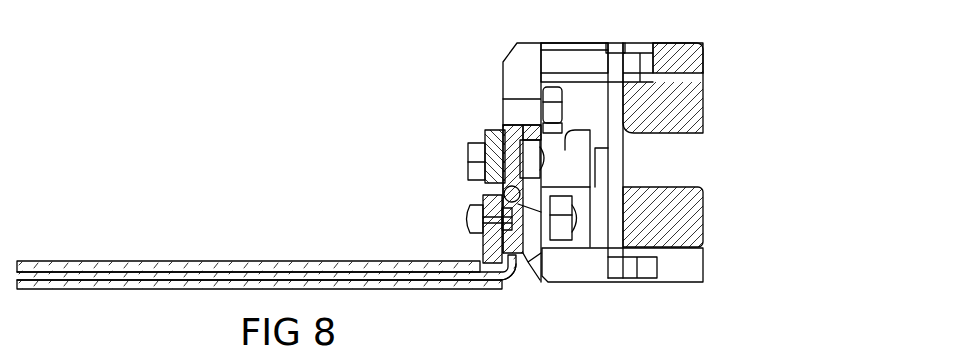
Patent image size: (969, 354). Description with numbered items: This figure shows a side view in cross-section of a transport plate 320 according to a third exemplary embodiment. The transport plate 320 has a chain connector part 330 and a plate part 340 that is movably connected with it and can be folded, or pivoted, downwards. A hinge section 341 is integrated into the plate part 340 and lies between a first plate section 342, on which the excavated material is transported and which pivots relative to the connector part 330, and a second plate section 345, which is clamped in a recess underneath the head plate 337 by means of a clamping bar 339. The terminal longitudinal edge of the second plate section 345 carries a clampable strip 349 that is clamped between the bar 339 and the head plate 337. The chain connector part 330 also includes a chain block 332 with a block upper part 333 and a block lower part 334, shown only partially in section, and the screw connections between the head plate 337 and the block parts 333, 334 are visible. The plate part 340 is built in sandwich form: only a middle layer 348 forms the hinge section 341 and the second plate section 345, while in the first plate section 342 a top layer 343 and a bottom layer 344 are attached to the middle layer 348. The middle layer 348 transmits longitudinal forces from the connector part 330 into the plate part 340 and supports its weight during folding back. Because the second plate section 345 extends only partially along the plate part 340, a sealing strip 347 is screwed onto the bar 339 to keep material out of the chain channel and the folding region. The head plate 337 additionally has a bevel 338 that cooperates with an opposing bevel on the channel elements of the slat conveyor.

The transport plate 320 is at (203, 98).
The chain connector part 330 is at (719, 24).
The chain block 332 is at (723, 153).
The block upper part 333 is at (673, 108).
The block lower part 334 is at (685, 227).
The head plate 337 is at (523, 108).
The bevel 338 is at (493, 55).
The clamping bar 339 is at (487, 143).
The plate part 340 is at (115, 227).
The hinge section 341 is at (522, 291).
The first plate section 342 is at (312, 234).
The top layer 343 is at (205, 263).
The bottom layer 344 is at (112, 285).
The second plate section 345 is at (520, 252).
The sealing strip 347 is at (490, 247).
The middle layer 348 is at (290, 273).
The clampable strip 349 is at (507, 202).